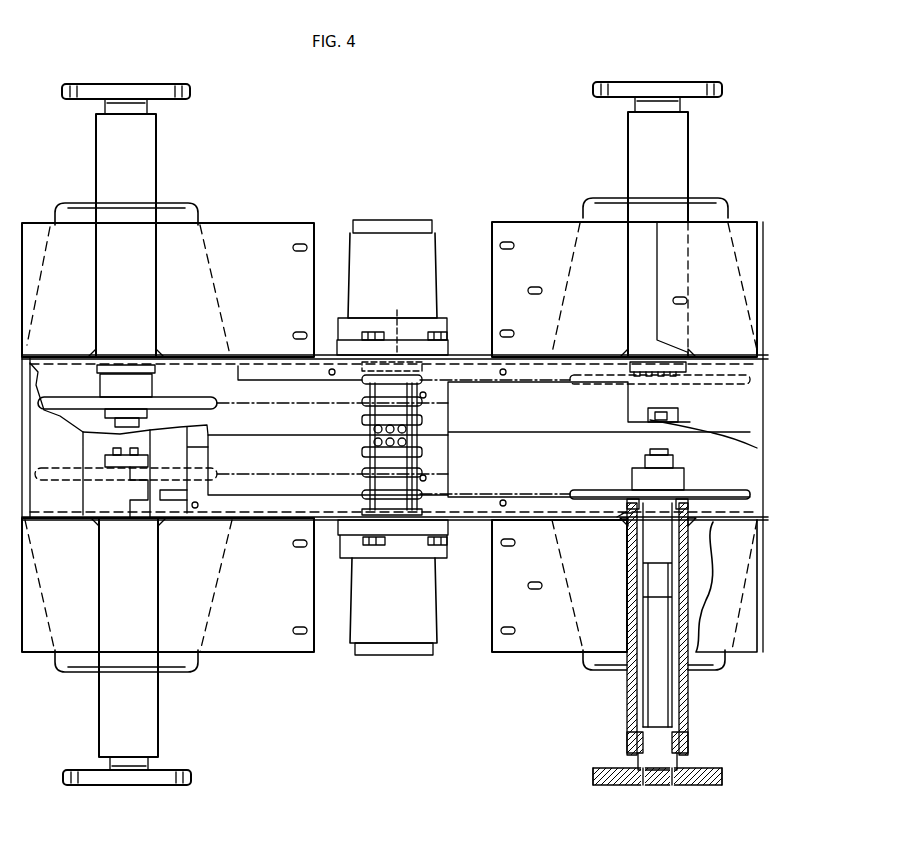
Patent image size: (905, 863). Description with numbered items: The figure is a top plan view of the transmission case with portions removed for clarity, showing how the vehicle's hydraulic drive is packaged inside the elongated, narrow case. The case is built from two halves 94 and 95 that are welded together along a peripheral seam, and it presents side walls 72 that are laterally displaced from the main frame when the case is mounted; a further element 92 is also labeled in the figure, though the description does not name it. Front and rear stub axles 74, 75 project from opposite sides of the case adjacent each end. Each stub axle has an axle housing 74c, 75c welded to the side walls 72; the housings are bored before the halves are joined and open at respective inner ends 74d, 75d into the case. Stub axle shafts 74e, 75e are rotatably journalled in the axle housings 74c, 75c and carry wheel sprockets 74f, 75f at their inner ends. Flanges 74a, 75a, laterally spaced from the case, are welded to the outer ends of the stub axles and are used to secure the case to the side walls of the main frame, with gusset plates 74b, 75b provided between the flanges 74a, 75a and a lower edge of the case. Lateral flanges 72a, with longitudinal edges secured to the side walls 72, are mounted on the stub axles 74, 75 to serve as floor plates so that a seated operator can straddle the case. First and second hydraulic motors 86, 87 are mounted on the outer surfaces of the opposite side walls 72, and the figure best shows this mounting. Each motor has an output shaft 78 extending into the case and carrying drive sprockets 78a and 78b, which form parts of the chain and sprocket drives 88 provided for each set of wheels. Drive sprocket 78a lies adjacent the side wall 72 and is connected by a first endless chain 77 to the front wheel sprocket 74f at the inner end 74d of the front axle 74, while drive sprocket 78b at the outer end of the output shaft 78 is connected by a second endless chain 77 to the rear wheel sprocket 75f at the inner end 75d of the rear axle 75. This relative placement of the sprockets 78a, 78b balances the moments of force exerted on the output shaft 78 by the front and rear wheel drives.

The side wall 72 is at (530, 357).
The lateral flange 72a is at (276, 654).
The front stub axle 74 is at (661, 433).
The flange 74a is at (705, 205).
The gusset plate 74b is at (740, 250).
The front axle housing 74c is at (672, 127).
The inner end of front axle housing 74d is at (622, 515).
The front stub axle shaft 74e is at (655, 712).
The front wheel sprocket 74f is at (594, 490).
The rear stub axle 75 is at (130, 415).
The flange 75a is at (165, 208).
The gusset plate 75b is at (197, 253).
The rear axle housing 75c is at (105, 130).
The inner end of rear axle housing 75d is at (160, 372).
The rear stub axle shaft 75e is at (127, 110).
The rear wheel sprocket 75f is at (170, 398).
The endless chain 77 is at (266, 473).
The motor output shaft 78 is at (449, 426).
The drive sprocket 78a is at (466, 535).
The drive sprocket 78b is at (394, 402).
The first hydraulic motor 86 is at (385, 245).
The second hydraulic motor 87 is at (400, 630).
The chain and sprocket drive 88 is at (262, 412).
The upper panel 92 is at (251, 407).
The transmission case half 94 is at (462, 372).
The transmission case half 95 is at (328, 521).